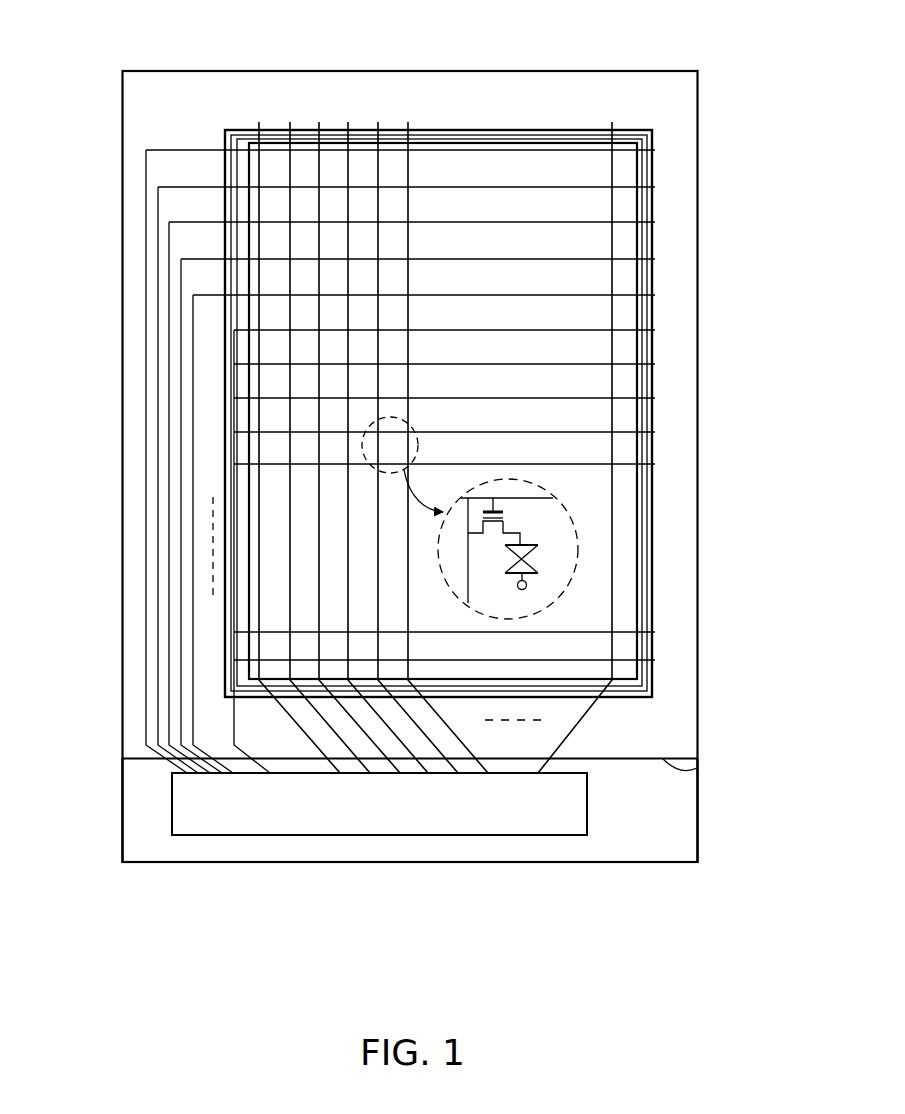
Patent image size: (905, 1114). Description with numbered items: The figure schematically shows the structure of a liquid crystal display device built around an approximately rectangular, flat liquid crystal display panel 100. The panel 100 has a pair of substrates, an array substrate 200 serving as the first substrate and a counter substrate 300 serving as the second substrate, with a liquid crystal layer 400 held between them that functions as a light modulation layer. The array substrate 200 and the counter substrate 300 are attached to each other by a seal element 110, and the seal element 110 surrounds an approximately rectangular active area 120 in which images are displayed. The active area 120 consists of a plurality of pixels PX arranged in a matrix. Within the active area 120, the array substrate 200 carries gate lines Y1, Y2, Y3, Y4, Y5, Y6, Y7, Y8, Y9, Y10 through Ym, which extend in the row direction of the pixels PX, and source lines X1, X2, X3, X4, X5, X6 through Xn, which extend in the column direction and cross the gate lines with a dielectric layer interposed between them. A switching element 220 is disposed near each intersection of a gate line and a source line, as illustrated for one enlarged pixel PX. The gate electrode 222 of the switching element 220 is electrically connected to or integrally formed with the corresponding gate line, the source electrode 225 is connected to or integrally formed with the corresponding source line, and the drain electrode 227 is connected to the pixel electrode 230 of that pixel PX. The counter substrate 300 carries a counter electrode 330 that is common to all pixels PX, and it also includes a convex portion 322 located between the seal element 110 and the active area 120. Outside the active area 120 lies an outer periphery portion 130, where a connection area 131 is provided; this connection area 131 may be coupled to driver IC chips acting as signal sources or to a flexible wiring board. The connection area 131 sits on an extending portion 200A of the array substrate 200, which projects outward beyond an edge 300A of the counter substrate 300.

The liquid crystal display panel 100 is at (702, 64).
The seal element 110 is at (653, 207).
The active area 120 is at (640, 136).
The outer periphery portion 130 is at (172, 104).
The connection area 131 is at (172, 794).
The array substrate 200 is at (698, 838).
The extending portion 200A is at (626, 842).
The counter substrate 300 is at (698, 705).
The edge 300A is at (700, 768).
The convex portion 322 is at (653, 407).
The pixel PX is at (578, 549).
The switching element 220 is at (520, 517).
The gate electrode 222 is at (494, 499).
The source electrode 225 is at (470, 534).
The drain electrode 227 is at (542, 535).
The pixel electrode 230 is at (546, 544).
The counter electrode 330 is at (517, 584).
The liquid crystal layer 400 is at (541, 575).
The source line X1 is at (258, 127).
The source line X2 is at (288, 128).
The source line X3 is at (319, 127).
The source line X4 is at (348, 128).
The source line X5 is at (379, 127).
The source line X6 is at (409, 128).
The source line Xn is at (601, 133).
The gate line Y1 is at (480, 149).
The gate line Y2 is at (458, 185).
The gate line Y3 is at (458, 220).
The gate line Y4 is at (458, 257).
The gate line Y5 is at (458, 293).
The gate line Y6 is at (458, 328).
The gate line Y7 is at (458, 362).
The gate line Y8 is at (458, 396).
The gate line Y9 is at (458, 430).
The gate line Y10 is at (458, 462).
The gate line Ym is at (455, 655).